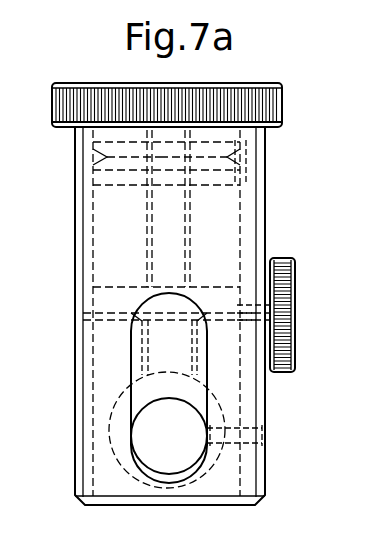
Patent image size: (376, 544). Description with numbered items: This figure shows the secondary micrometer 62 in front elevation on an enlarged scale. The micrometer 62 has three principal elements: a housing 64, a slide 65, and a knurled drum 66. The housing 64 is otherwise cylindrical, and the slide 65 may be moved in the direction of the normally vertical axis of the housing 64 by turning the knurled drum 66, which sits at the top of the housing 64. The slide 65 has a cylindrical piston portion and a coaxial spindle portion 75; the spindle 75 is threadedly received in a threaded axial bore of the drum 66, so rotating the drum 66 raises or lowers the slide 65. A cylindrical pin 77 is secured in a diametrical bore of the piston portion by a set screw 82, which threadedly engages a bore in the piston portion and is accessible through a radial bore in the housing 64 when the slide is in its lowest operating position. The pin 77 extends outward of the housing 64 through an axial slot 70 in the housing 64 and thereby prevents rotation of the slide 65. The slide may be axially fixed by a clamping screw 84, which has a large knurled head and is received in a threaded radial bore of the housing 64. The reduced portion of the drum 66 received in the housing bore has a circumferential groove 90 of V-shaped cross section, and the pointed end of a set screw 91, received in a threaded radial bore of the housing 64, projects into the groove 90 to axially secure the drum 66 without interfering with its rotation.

The micrometer 62 is at (276, 211).
The housing 64 is at (75, 217).
The slide 65 is at (110, 347).
The knurled drum 66 is at (272, 100).
The axial slot 70 is at (134, 402).
The spindle portion 75 is at (163, 243).
The cylindrical pin 77 is at (143, 435).
The set screw 82 is at (262, 440).
The clamping screw 84 is at (282, 355).
The circumferential groove 90 is at (82, 157).
The set screw 91 is at (262, 157).